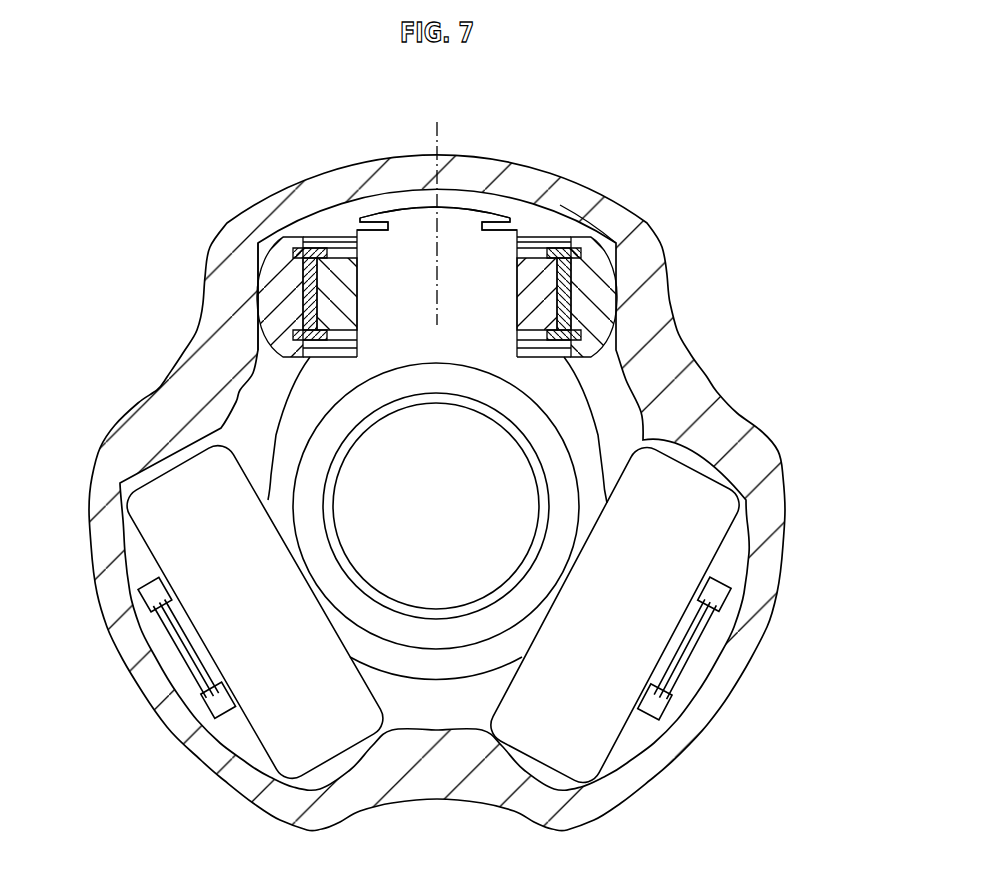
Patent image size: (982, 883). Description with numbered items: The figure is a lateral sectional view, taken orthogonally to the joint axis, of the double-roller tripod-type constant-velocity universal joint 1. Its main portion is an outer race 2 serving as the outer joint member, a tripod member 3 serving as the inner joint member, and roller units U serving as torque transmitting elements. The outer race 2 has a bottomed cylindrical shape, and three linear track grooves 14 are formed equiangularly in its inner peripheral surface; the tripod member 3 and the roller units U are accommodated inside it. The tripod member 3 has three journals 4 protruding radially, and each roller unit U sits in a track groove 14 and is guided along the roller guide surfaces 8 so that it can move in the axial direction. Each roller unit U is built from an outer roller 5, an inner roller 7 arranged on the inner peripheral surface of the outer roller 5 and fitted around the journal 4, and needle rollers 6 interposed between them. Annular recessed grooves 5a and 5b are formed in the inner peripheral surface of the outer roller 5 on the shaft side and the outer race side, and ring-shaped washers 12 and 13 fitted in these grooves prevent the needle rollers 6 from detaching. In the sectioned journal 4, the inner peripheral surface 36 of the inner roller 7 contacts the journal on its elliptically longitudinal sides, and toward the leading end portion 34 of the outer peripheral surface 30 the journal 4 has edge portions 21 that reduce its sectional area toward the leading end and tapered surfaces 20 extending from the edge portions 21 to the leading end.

The tripod-type constant-velocity universal joint 1 is at (622, 171).
The outer race 2 is at (573, 197).
The tripod member 3 is at (587, 450).
The journal 4 is at (412, 238).
The outer roller 5 is at (277, 262).
The annular recessed groove 5a is at (297, 268).
The annular recessed groove 5b is at (262, 374).
The needle rollers 6 is at (306, 303).
The inner roller 7 is at (338, 268).
The roller guide surface 8 is at (610, 283).
The washer 12 is at (562, 237).
The washer 13 is at (590, 375).
The track groove 14 is at (320, 223).
The tapered surface 20 is at (368, 213).
The edge portion 21 is at (518, 224).
The outer peripheral surface 30 is at (572, 300).
The retaining cap 34 is at (458, 208).
The inner peripheral surface 36 is at (293, 326).
The roller unit U is at (590, 222).